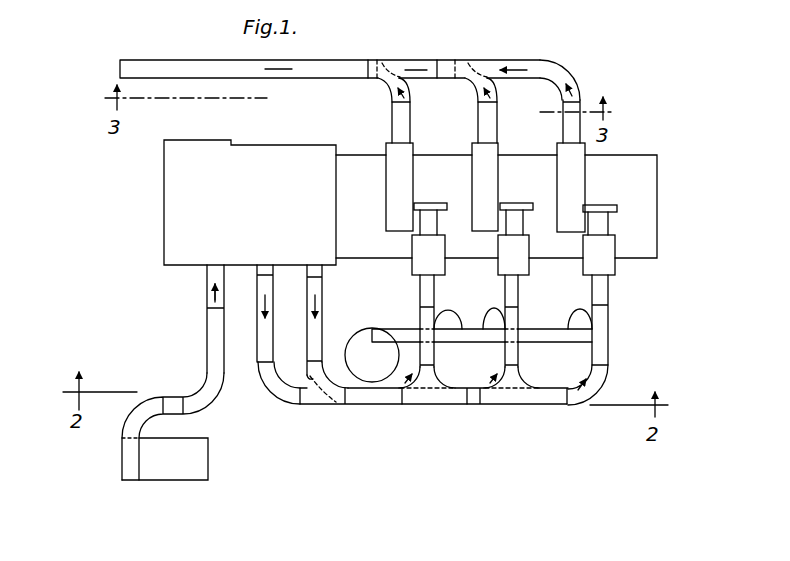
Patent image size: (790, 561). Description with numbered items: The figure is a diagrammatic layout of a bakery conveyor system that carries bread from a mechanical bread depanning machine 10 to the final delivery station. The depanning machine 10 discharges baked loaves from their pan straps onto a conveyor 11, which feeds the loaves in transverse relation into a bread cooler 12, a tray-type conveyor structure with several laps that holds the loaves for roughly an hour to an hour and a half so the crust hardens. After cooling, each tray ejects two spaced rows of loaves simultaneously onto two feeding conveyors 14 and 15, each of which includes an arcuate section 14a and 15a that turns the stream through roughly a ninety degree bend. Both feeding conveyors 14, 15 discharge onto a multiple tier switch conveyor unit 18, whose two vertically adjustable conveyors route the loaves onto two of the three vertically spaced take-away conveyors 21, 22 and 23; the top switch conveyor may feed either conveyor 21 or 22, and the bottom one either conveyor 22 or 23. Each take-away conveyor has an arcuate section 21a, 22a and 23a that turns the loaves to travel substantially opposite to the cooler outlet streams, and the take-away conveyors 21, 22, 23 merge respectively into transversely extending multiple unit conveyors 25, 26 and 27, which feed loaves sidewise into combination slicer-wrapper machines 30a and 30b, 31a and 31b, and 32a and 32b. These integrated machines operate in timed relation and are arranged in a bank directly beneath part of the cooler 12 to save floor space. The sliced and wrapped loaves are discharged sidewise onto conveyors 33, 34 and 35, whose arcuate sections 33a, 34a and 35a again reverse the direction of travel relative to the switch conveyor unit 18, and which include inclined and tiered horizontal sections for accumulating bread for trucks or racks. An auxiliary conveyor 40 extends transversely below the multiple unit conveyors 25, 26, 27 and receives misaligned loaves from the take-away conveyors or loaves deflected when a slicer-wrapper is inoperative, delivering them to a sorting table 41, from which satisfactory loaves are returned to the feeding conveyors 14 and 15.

The mechanical bread depanning machine 10 is at (176, 478).
The conveyor 11 is at (203, 387).
The bread cooler 12 is at (212, 160).
The feeding conveyor 14 is at (257, 345).
The arcuate section 14a is at (273, 394).
The feeding conveyor 15 is at (320, 326).
The arcuate section 15a is at (305, 376).
The multiple tier switch conveyor unit 18 is at (388, 405).
The take-away conveyor 21 is at (403, 398).
The arcuate section 21a is at (435, 368).
The take-away conveyor 22 is at (467, 398).
The arcuate section 22a is at (516, 378).
The take-away conveyor 23 is at (538, 399).
The arcuate section 23a is at (621, 380).
The multiple unit conveyor 25 is at (437, 313).
The multiple unit conveyor 26 is at (517, 292).
The multiple unit conveyor 27 is at (605, 293).
The combination slicer-wrapper machine 30a is at (412, 245).
The combination slicer-wrapper machine 30b is at (393, 205).
The combination slicer-wrapper machine 31a is at (529, 250).
The combination slicer-wrapper machine 31b is at (492, 184).
The combination slicer-wrapper machine 32a is at (611, 252).
The combination slicer-wrapper machine 32b is at (574, 182).
The conveyor 33 is at (409, 128).
The arcuate section 33a is at (388, 86).
The conveyor 34 is at (496, 123).
The arcuate section 34a is at (470, 85).
The conveyor 35 is at (580, 93).
The arcuate section 35a is at (600, 58).
The auxiliary conveyor 40 is at (538, 340).
The sorting table 41 is at (362, 330).